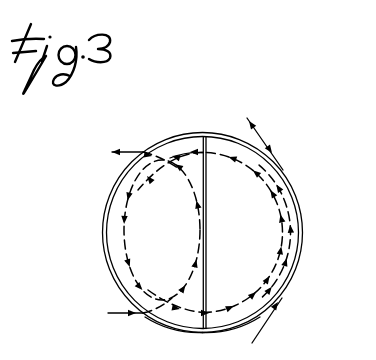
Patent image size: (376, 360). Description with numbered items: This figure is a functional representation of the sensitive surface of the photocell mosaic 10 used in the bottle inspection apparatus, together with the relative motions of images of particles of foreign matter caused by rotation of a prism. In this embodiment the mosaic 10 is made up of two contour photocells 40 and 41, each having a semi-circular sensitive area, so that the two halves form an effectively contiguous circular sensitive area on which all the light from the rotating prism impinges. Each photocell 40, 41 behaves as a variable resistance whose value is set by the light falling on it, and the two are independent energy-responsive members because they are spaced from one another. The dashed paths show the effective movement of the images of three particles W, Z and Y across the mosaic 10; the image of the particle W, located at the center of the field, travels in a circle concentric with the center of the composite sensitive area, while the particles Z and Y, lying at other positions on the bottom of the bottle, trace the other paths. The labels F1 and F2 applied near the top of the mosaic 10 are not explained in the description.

The photocell mosaic 10 is at (302, 178).
The photocell 40 is at (239, 328).
The photocell 41 is at (168, 328).
The force on left partition side F1 is at (174, 136).
The force on right partition side F2 is at (218, 134).
The particle W is at (270, 193).
The particle Y is at (264, 324).
The particle Z is at (131, 129).